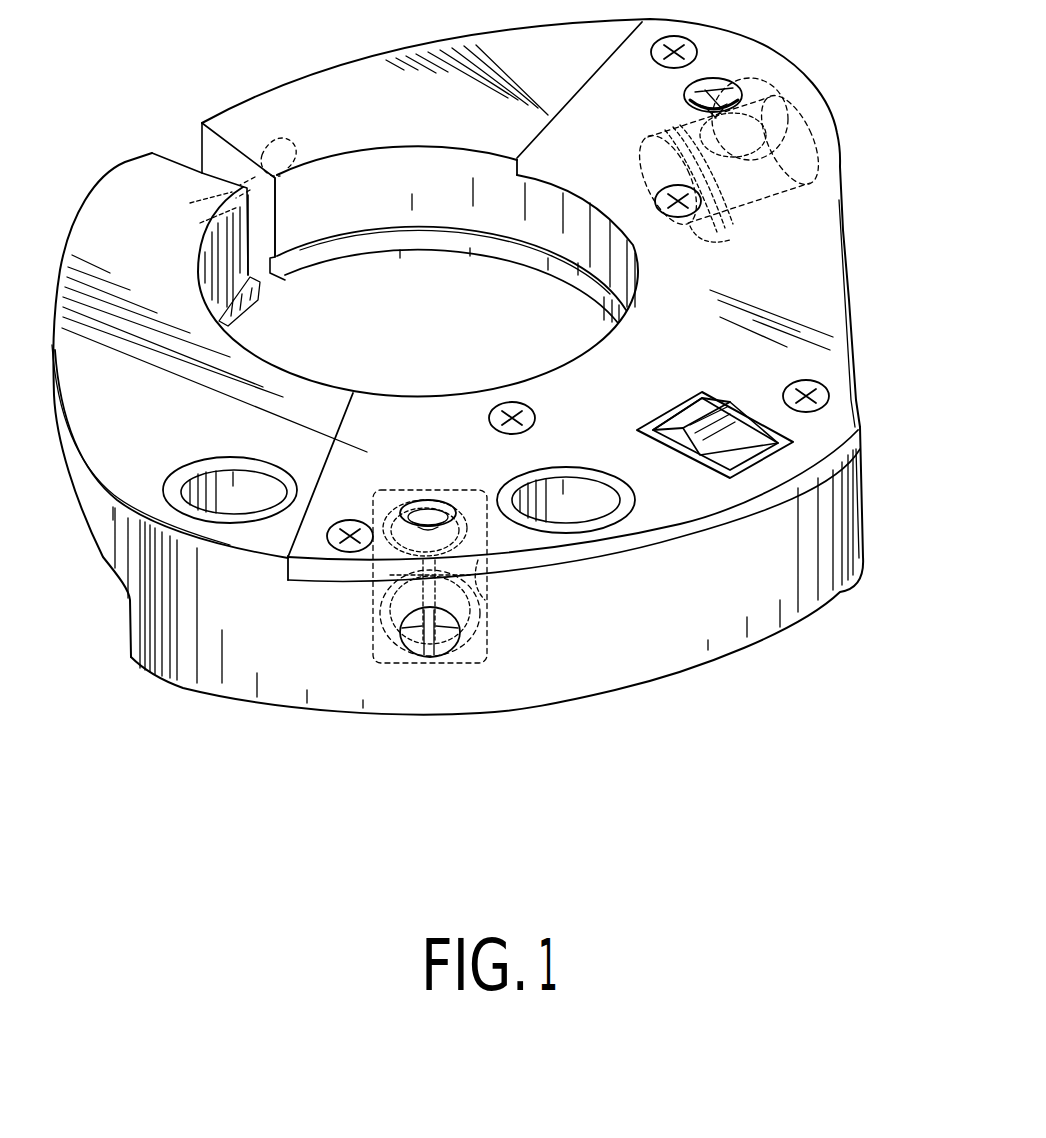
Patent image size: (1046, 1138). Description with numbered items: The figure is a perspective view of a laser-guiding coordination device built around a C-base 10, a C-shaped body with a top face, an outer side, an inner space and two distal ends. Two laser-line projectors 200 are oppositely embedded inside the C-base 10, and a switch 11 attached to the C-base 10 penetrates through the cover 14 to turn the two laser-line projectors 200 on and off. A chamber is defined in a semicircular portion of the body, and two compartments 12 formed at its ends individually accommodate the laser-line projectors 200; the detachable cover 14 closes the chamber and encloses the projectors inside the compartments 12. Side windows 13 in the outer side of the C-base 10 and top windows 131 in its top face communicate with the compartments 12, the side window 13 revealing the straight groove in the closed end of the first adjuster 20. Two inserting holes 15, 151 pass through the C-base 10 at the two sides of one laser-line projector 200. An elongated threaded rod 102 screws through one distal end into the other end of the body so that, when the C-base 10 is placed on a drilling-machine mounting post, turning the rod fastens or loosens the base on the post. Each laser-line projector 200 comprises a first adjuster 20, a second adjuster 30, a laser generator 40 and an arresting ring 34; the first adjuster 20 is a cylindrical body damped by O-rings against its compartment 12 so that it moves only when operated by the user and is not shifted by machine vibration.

The C-base 10 is at (673, 657).
The switch 11 is at (687, 415).
The compartment 12 is at (487, 577).
The side window 13 is at (442, 645).
The cover 14 is at (667, 520).
The inserting hole 15 is at (210, 503).
The first adjuster 20 is at (753, 190).
The second adjuster 30 is at (780, 140).
The arresting ring 34 is at (742, 127).
The laser generator 40 is at (720, 230).
The elongated threaded rod 102 is at (263, 157).
The top window 131 is at (427, 498).
The inserting hole 151 is at (588, 488).
The laser-line projector 200 is at (577, 344).